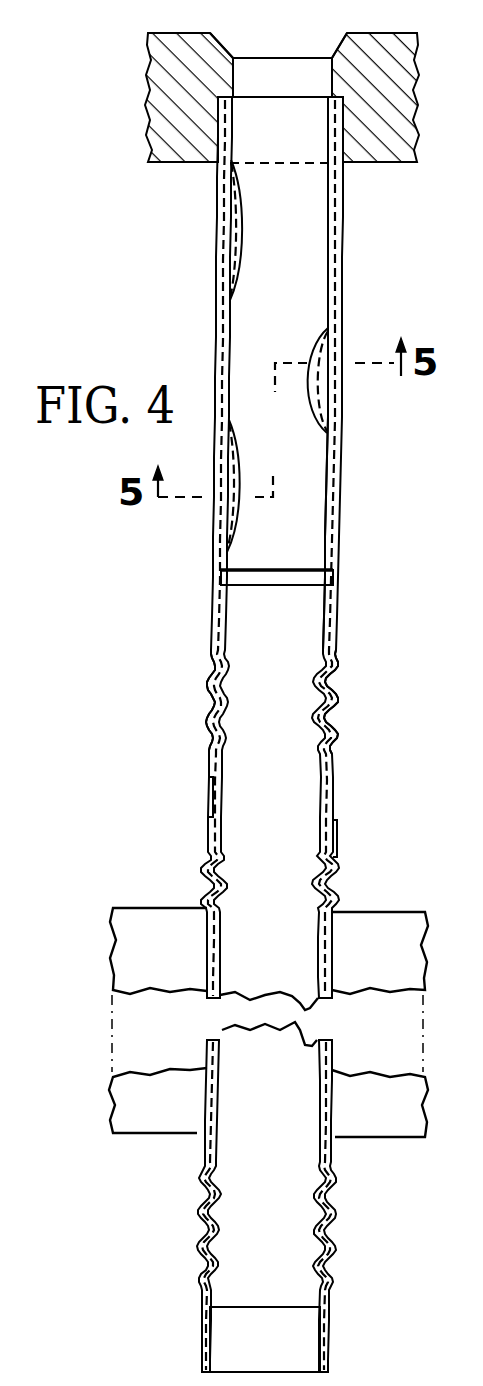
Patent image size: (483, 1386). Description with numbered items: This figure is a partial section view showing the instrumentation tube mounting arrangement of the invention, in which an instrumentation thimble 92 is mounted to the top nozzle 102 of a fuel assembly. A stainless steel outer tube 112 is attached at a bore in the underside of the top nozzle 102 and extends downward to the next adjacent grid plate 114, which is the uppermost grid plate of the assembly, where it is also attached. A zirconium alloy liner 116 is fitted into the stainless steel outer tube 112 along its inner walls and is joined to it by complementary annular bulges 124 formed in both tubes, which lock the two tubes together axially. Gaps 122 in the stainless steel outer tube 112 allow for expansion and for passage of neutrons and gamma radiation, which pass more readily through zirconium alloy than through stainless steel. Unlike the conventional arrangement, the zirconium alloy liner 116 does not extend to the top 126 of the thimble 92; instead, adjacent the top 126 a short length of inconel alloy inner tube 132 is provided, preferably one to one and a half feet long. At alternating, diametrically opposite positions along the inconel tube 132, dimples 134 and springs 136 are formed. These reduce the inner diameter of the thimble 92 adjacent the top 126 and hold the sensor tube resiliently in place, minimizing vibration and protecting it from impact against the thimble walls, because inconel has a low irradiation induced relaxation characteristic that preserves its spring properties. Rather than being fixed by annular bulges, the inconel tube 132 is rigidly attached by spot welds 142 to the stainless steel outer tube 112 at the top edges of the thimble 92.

The instrumentation thimble 92 is at (200, 566).
The top nozzle 102 is at (185, 163).
The stainless steel outer tube 112 is at (343, 203).
The grid plate 114 is at (138, 897).
The zirconium alloy liner 116 is at (311, 794).
The gaps 122 is at (206, 795).
The complementary annular bulges 124 is at (210, 735).
The top of the thimble tube 126 is at (284, 97).
The inconel alloy inner tube 132 is at (345, 248).
The dimples 134 is at (229, 245).
The springs 136 is at (309, 350).
The spot welds 142 is at (338, 60).